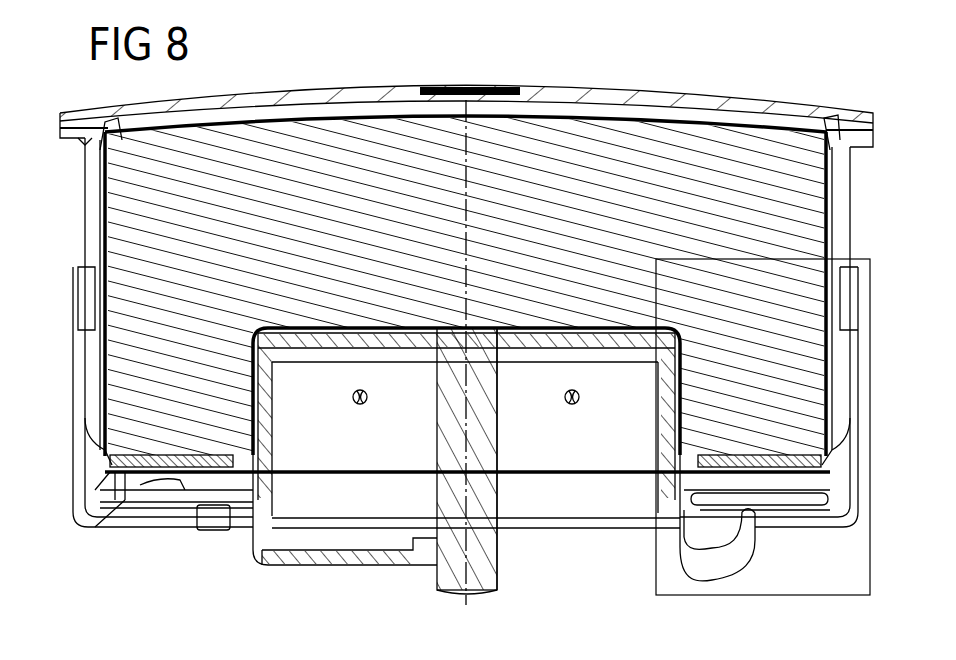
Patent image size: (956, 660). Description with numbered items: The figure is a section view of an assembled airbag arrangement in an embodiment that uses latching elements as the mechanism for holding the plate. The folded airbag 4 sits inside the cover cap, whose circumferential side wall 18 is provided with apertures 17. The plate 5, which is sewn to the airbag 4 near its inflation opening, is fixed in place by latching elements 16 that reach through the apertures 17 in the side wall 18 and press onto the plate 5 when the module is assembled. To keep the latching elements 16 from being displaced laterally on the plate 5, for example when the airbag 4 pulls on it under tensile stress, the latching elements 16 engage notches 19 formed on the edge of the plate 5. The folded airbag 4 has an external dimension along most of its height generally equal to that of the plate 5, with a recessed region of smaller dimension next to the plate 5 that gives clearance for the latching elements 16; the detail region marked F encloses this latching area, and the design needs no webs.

The circumferential side wall 18 is at (95, 221).
The folded airbag 4 is at (130, 245).
The latching elements 16 is at (100, 430).
The apertures 17 is at (95, 467).
The notches 19 is at (100, 527).
The plate 5 is at (173, 462).
The detail F is at (829, 597).